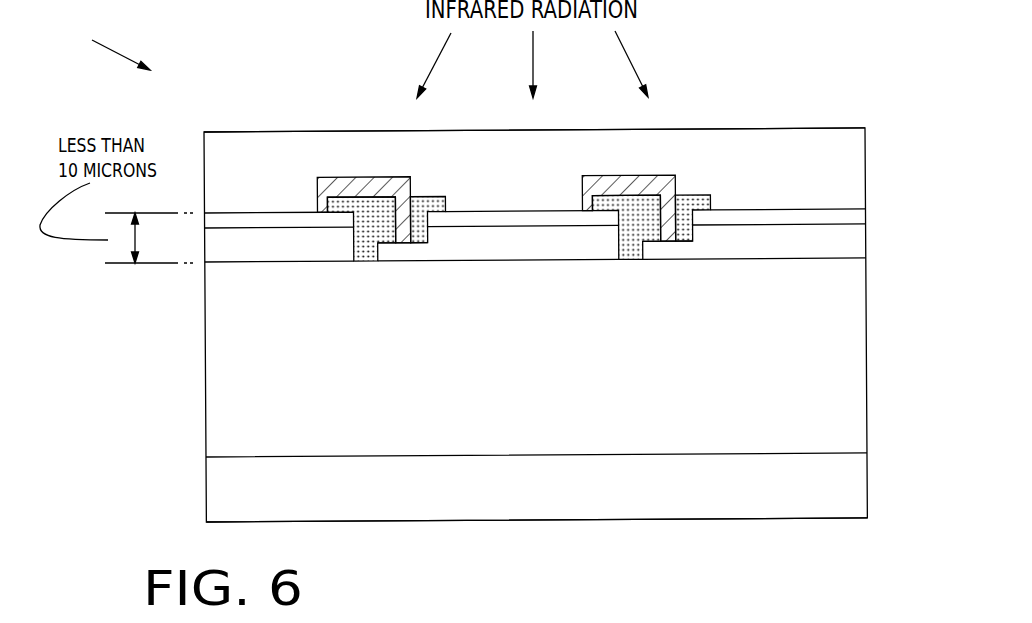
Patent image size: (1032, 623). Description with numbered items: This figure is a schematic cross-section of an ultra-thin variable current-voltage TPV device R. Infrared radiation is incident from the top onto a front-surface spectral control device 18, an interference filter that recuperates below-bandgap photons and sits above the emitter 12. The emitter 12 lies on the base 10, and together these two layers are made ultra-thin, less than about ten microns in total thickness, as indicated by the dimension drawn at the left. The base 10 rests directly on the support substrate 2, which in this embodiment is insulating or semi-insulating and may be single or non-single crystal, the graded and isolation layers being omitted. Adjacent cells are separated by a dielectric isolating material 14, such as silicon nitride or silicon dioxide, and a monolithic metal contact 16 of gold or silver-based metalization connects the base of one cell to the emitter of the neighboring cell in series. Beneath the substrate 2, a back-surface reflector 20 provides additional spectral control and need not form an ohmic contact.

The variable current-voltage TPV device R is at (111, 48).
The support substrate 2 is at (832, 370).
The base 10 is at (847, 237).
The emitter 12 is at (855, 217).
The dielectric isolating material 14 is at (697, 197).
The monolithic metal contact 16 is at (662, 177).
The front-surface spectral control device 18 is at (818, 155).
The back-surface reflector 20 is at (792, 503).